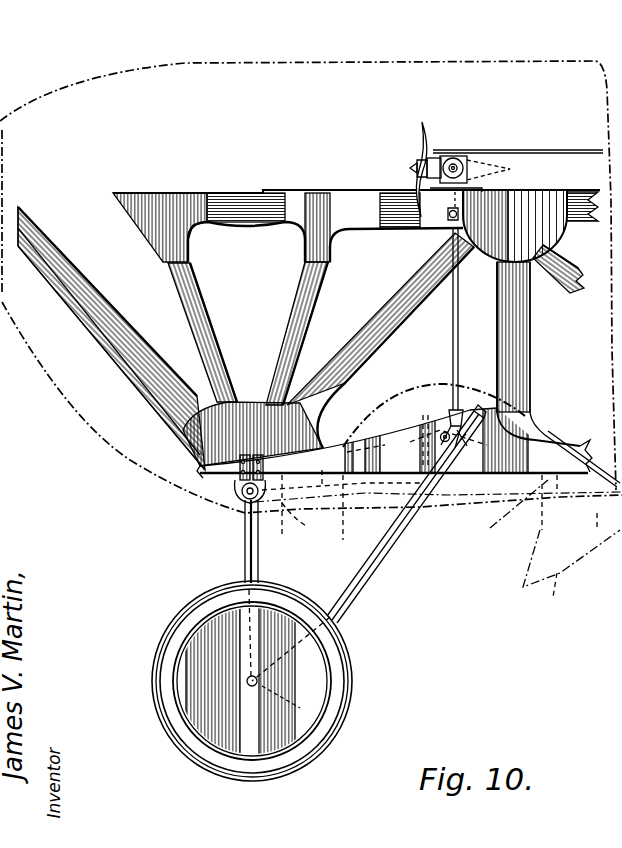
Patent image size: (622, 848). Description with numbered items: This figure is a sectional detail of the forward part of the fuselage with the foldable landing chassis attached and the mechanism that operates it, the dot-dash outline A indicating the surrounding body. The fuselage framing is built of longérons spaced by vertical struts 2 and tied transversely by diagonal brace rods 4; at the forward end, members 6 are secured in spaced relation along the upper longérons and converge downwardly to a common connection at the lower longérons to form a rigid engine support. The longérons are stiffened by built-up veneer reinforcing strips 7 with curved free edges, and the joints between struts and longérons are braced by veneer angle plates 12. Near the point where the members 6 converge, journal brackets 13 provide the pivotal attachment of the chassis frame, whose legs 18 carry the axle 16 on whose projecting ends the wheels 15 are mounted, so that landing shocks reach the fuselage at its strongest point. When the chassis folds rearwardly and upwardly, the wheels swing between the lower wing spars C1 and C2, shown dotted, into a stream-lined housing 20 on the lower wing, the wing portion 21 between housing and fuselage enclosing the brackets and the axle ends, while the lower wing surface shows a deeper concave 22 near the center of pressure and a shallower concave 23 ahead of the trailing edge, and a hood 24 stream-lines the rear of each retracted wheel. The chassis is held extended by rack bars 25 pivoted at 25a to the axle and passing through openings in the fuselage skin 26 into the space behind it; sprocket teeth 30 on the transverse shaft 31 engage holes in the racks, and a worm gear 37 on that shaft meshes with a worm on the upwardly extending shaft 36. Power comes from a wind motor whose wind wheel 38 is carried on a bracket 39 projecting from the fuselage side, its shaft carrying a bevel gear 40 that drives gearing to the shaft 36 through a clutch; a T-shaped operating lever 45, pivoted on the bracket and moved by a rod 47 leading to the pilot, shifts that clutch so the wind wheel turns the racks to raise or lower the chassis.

The vertical strut 2 is at (530, 350).
The diagonal brace rod 4 is at (593, 206).
The converging member 6 is at (145, 338).
The reinforcing strip 7 is at (240, 222).
The angle plate 12 is at (340, 236).
The journal bracket 13 is at (240, 491).
The wheel 15 is at (342, 712).
The axle 16 is at (248, 688).
The leg 18 is at (243, 560).
The housing 20 is at (413, 388).
The wing portion 21 is at (294, 516).
The concave 22 is at (342, 510).
The concave 23 is at (618, 525).
The hood 24 is at (571, 575).
The rack bar 25 is at (368, 578).
The pivotal attachment 25a is at (287, 701).
The skin 26 is at (308, 523).
The sprocket teeth 30 is at (417, 440).
The transverse shaft 31 is at (444, 434).
The upwardly extending shaft 36 is at (458, 336).
The worm gear 37 is at (466, 449).
The wind wheel 38 is at (416, 148).
The bracket 39 is at (440, 195).
The bevel gear 40 is at (470, 174).
The T-shaped operating lever 45 is at (434, 160).
The rod 47 is at (518, 137).
The hull outline A is at (311, 273).
The wing spar C1 is at (438, 487).
The wing spar C2 is at (515, 516).